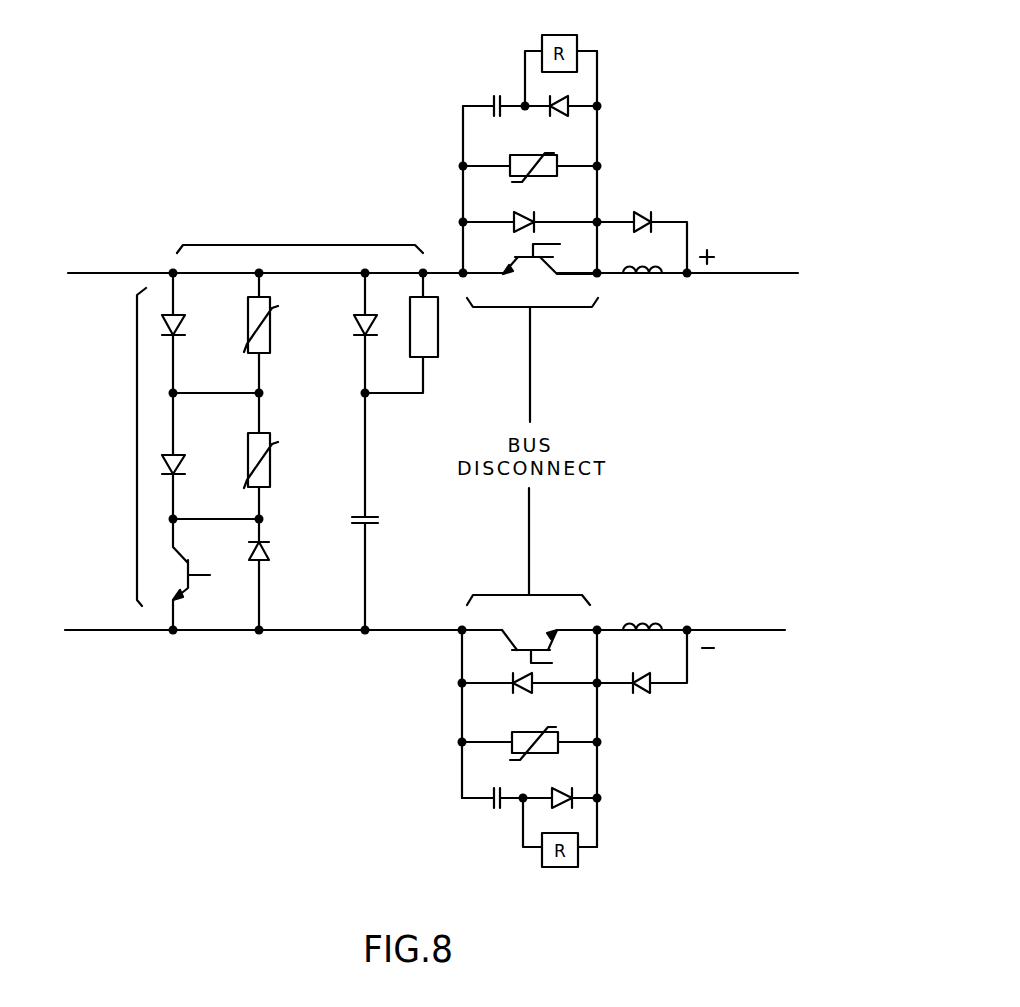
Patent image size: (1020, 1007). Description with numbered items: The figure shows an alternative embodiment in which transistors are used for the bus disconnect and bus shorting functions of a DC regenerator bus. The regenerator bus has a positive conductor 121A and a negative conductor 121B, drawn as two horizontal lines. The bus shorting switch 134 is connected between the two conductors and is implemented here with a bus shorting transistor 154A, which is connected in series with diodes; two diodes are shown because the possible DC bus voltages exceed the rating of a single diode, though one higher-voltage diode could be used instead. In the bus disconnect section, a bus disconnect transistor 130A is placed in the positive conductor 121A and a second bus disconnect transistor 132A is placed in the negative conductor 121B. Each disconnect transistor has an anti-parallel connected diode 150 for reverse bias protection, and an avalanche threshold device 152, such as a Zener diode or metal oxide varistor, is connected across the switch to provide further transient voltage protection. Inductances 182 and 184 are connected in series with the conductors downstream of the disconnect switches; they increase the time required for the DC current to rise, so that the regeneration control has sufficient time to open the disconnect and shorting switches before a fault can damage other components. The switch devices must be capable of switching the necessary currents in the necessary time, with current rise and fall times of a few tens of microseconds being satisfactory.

The negative conductor 121B is at (107, 272).
The positive conductor 121A is at (90, 632).
The bus shorting switch 134 is at (137, 432).
The bus shorting switch transistor 154A is at (198, 590).
The avalanche threshold device 152 is at (565, 165).
The anti-parallel connected diode 150 is at (545, 218).
The bus disconnect switch transistor 130A is at (528, 266).
The inductance 182 is at (650, 276).
The inductance 184 is at (638, 622).
The bus disconnect switch transistor 132A is at (523, 630).